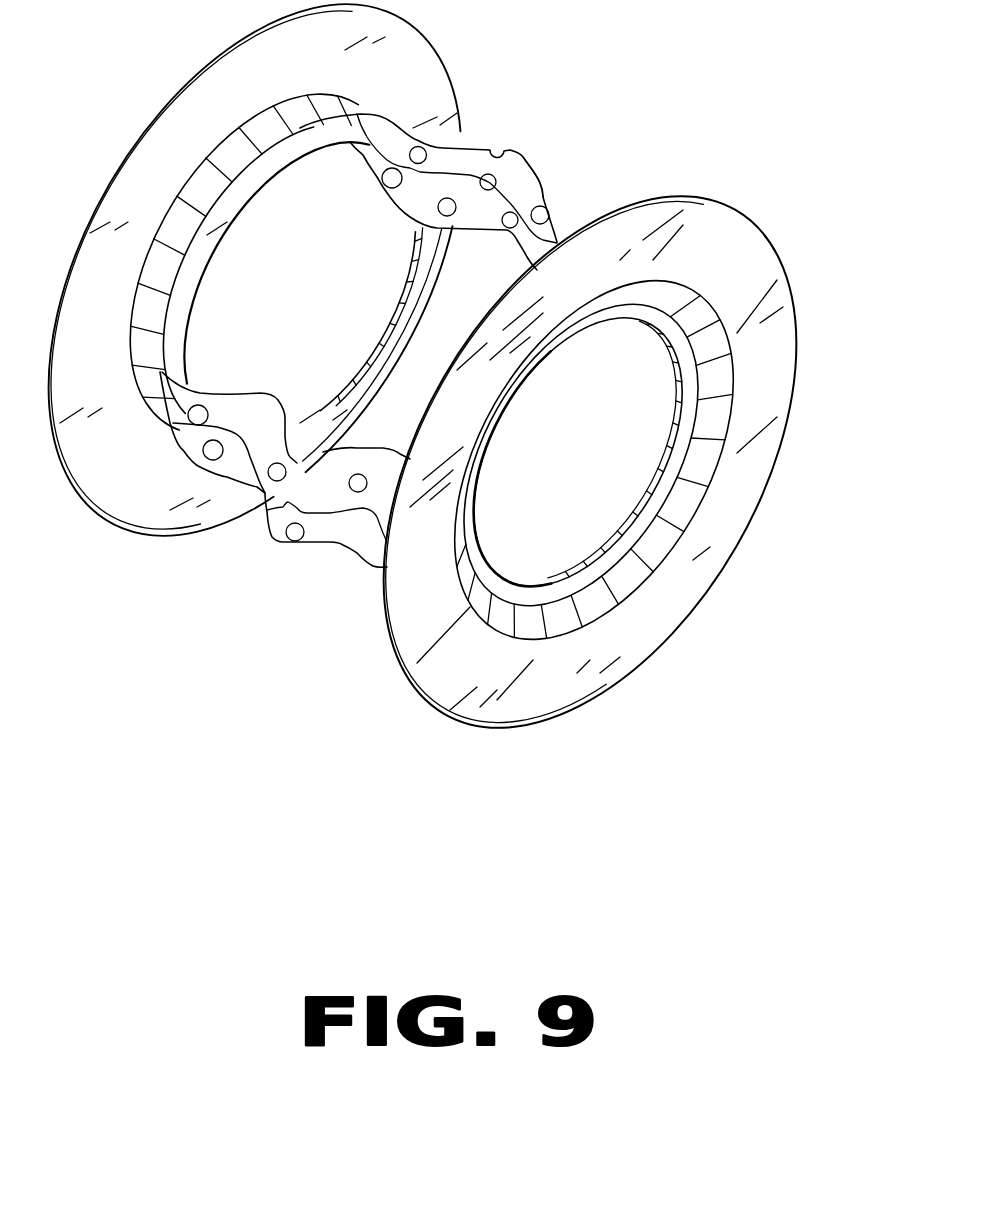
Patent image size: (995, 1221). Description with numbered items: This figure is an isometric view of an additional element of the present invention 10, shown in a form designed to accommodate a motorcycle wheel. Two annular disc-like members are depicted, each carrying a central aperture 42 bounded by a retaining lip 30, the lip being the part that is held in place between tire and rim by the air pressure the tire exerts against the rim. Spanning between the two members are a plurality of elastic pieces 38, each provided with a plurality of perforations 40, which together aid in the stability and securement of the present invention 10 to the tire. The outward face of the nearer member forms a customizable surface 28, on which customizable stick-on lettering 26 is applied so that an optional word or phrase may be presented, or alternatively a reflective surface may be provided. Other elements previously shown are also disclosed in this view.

The present invention 10 is at (403, 677).
The customizable stick-on lettering 26 is at (672, 585).
The customizable surface 28 is at (407, 590).
The retaining lip 30 is at (697, 397).
The elastic pieces 38 is at (467, 151).
The perforations 40 is at (543, 203).
The central aperture 42 is at (647, 383).